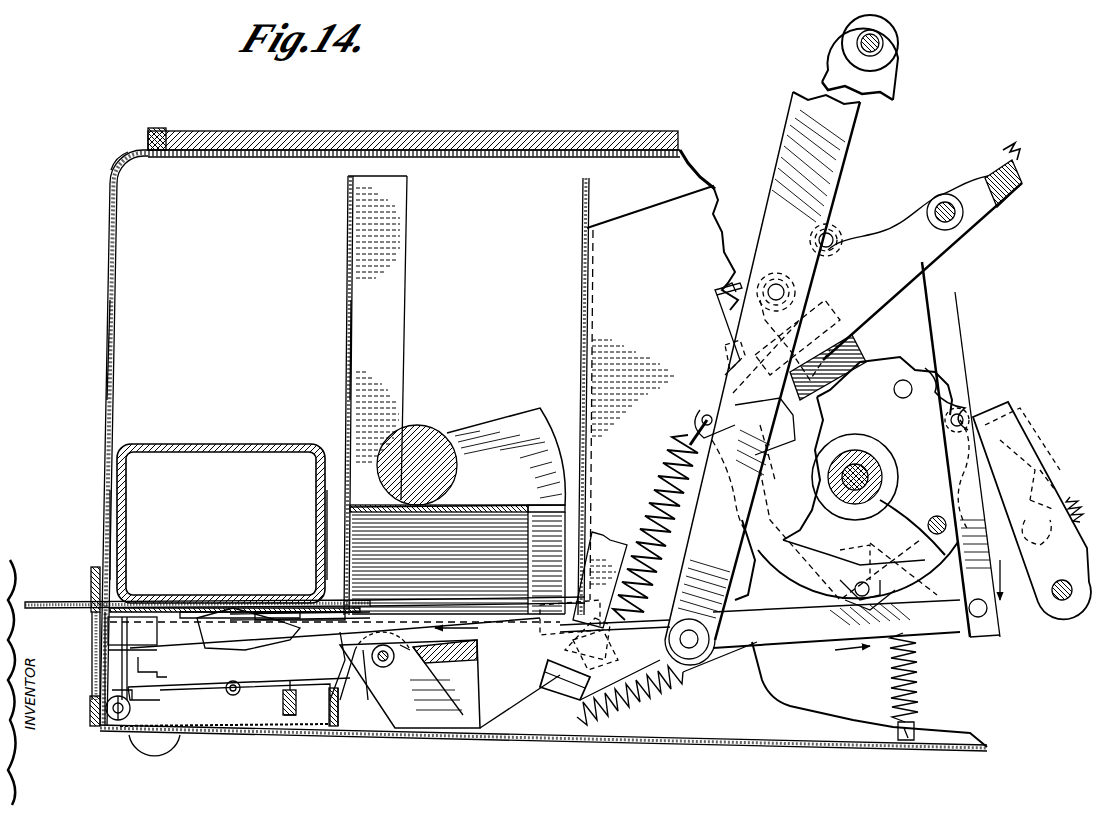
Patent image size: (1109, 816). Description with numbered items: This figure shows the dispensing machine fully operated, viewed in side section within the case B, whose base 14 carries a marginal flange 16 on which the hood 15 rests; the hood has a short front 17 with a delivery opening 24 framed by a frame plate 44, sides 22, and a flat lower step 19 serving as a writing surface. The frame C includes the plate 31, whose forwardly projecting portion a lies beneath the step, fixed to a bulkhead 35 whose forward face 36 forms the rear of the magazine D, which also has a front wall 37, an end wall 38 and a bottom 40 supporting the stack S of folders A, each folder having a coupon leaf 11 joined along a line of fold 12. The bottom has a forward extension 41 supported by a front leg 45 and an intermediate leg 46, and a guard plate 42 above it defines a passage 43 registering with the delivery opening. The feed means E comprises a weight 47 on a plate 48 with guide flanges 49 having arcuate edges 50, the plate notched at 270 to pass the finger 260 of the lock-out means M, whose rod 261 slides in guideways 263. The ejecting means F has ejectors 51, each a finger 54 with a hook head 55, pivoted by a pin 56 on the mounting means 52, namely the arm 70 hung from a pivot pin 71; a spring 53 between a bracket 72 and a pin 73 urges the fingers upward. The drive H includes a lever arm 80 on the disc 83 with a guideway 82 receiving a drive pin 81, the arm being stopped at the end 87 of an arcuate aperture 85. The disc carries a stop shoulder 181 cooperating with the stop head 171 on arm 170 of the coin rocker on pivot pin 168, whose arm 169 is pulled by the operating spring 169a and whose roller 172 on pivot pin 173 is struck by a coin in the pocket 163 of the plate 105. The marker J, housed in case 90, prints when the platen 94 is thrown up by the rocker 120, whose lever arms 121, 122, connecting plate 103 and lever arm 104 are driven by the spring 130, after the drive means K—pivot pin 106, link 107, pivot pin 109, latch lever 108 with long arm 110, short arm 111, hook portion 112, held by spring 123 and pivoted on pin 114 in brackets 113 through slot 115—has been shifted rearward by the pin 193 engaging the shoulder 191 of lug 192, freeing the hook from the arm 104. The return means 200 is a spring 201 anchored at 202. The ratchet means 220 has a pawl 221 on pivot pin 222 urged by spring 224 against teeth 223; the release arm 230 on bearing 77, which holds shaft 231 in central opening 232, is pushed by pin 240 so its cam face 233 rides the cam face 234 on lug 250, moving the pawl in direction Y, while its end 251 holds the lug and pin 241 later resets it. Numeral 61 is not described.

The leaf 11 is at (44, 606).
The line of fold 12 is at (30, 607).
The base 14 is at (728, 746).
The hood 15 is at (106, 162).
The marginal flange 16 is at (92, 714).
The front 17 is at (108, 340).
The forward lower step 19 is at (379, 143).
The sides 22 is at (230, 228).
The delivery opening 24 is at (80, 612).
The plate 31 is at (628, 258).
The bulkhead 35 is at (589, 340).
The forward face 36 is at (582, 205).
The front wall 37 is at (352, 320).
The end wall 38 is at (405, 250).
The bottom 40 is at (500, 615).
The forward extension 41 is at (185, 606).
The guard plate 42 is at (160, 603).
The passage 43 is at (272, 610).
The frame plate 44 is at (94, 640).
The front leg 45 is at (100, 666).
The intermediate leg 46 is at (318, 724).
The weight 47 is at (422, 430).
The plate 48 is at (500, 505).
The guide flanges 49 is at (510, 425).
The arcuate edges 50 is at (551, 410).
The ejector 51 is at (648, 645).
The mounting means 52 is at (860, 148).
The means yieldingly urging the ejectors 53 is at (672, 464).
The finger 54 is at (315, 641).
The hook head 55 is at (236, 633).
The pivot pin 56 is at (700, 663).
The slide 61 is at (228, 607).
The arm 70 is at (776, 160).
The pivot pin 71 is at (885, 43).
The bracket 72 is at (760, 430).
The pin 73 is at (603, 622).
The bearing 77 is at (860, 470).
The lever arm 80 is at (852, 350).
The drive pin 81 is at (778, 282).
The guideway 82 is at (812, 320).
The disc 83 is at (867, 461).
The arcuate aperture 85 is at (722, 288).
The end 87 is at (714, 293).
The case 90 is at (276, 443).
The platen 94 is at (222, 648).
The connecting plate 103 is at (262, 690).
The lever arm 104 is at (148, 634).
The plate 105 is at (938, 308).
The pivot pin 106 is at (945, 425).
The link 107 is at (985, 588).
The latch lever 108 is at (782, 652).
The pivot pin 109 is at (981, 622).
The long arm 110 is at (836, 625).
The short arm 111 is at (233, 695).
The hook portion 112 is at (160, 672).
The brackets 113 is at (416, 730).
The pivot pin 114 is at (388, 666).
The slot 115 is at (362, 662).
The rocker 120 is at (213, 698).
The lever arm 121 is at (289, 686).
The lever arm 122 is at (128, 698).
The spring 123 is at (615, 706).
The helical tension spring 130 is at (118, 722).
The pocket 163 is at (725, 345).
The pivot pin 168 is at (947, 194).
The arm 169 is at (1006, 205).
The operating spring 169a is at (1014, 150).
The arm 170 is at (936, 258).
The stop head 171 is at (712, 398).
The operating roller 172 is at (836, 228).
The pivot pin 173 is at (838, 240).
The stop shoulder 181 is at (742, 505).
The shoulder 191 is at (848, 560).
The lug 192 is at (918, 582).
The pin 193 is at (855, 576).
The return means 200 is at (928, 697).
The helical tension spring 201 is at (895, 688).
The anchor 202 is at (908, 745).
The ratchet means 220 is at (1028, 400).
The pawl 221 is at (1040, 415).
The pivot pin 222 is at (1061, 601).
The ratchet teeth 223 is at (957, 395).
The spring 224 is at (1079, 503).
The release arm 230 is at (1042, 440).
The shaft 231 is at (874, 472).
The central opening 232 is at (882, 486).
The cam face 233 is at (1045, 455).
The cam face 234 is at (1036, 522).
The operating pin 240 is at (928, 523).
The operating pin 241 is at (906, 378).
The lug 250 is at (1058, 585).
The end 251 is at (1055, 472).
The finger 260 is at (568, 600).
The rod 261 is at (600, 532).
The guideways 263 is at (560, 692).
The notch 270 is at (536, 507).
The folder A is at (398, 545).
The case B is at (106, 233).
The frame C is at (651, 185).
The magazine D is at (343, 296).
The feed means E is at (478, 426).
The ejecting means F is at (474, 660).
The drive H is at (736, 312).
The marker J is at (213, 438).
The drive means K is at (947, 634).
The lock-out means M is at (621, 540).
The stack S is at (465, 522).
The arrow Y is at (1018, 382).
The forwardly projecting portion a is at (666, 230).